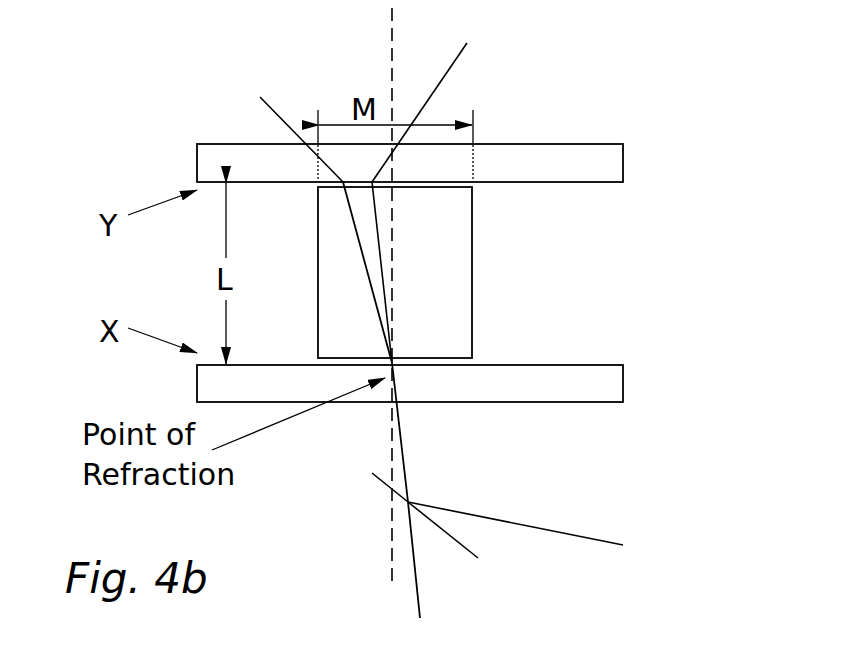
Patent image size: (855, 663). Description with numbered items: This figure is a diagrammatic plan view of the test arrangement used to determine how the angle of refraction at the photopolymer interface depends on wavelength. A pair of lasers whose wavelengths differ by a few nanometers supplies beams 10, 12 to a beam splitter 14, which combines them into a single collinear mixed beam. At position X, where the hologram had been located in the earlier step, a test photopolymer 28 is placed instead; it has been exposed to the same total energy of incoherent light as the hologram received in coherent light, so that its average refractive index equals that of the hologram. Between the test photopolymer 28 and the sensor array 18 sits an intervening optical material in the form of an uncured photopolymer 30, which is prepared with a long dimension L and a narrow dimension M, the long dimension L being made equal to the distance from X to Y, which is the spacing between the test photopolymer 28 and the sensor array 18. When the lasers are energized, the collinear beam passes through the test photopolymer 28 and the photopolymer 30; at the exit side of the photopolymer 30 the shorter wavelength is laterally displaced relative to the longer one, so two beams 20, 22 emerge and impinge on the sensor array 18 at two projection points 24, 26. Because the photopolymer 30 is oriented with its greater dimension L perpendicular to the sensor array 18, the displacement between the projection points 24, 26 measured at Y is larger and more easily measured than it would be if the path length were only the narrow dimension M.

The beam 10 is at (422, 603).
The beam 12 is at (565, 535).
The beam splitter 14 is at (380, 483).
The sensor array 18 is at (598, 165).
The exit beam 20 is at (380, 248).
The exit beam 22 is at (352, 233).
The projection point 24 is at (437, 99).
The projection point 26 is at (282, 123).
The test photopolymer 28 is at (598, 390).
The intervening optical material 30 is at (443, 307).